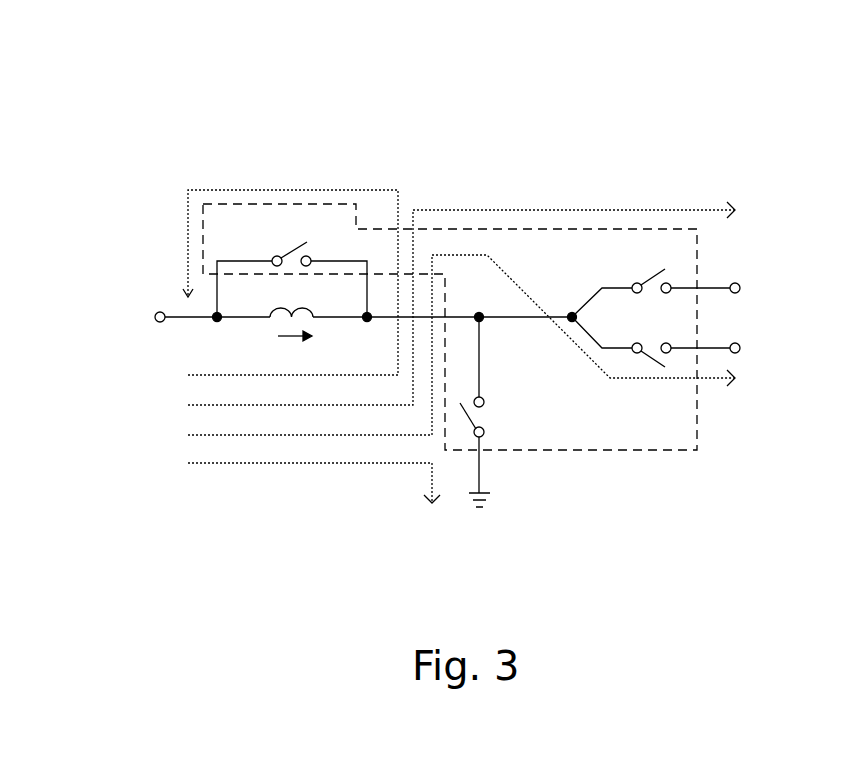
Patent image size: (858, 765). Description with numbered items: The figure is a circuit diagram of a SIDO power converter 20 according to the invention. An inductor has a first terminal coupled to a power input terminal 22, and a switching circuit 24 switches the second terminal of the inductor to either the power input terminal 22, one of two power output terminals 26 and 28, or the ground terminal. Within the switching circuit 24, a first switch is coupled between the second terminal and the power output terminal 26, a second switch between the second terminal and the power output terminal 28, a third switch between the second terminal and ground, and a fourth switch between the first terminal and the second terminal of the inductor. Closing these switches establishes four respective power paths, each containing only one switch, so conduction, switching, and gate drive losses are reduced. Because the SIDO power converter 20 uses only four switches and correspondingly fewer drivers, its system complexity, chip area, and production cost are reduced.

The SIDO power converter 20 is at (793, 134).
The power input terminal 22 is at (157, 312).
The switching circuit 24 is at (697, 420).
The power output terminal 26 is at (738, 284).
The power output terminal 28 is at (738, 352).